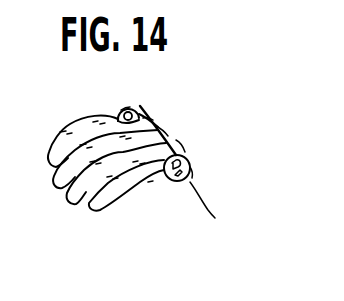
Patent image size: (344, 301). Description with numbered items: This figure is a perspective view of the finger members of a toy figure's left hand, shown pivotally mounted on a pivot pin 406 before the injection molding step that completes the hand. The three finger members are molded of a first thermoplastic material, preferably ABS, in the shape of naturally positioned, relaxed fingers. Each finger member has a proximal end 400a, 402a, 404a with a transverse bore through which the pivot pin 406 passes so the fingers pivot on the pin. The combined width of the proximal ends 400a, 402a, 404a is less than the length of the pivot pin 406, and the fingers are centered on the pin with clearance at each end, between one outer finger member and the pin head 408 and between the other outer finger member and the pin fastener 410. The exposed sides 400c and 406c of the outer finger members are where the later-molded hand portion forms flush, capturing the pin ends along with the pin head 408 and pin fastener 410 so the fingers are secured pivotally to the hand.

The proximal end of finger member 400a is at (183, 156).
The exposed side of finger member 400c is at (190, 167).
The proximal end of finger member 402a is at (176, 154).
The proximal end of finger member 404a is at (156, 126).
The pivot pin 406 is at (140, 108).
The exposed side of finger member 406c is at (143, 118).
The pin head 408 is at (211, 195).
The pin fastener 410 is at (121, 110).